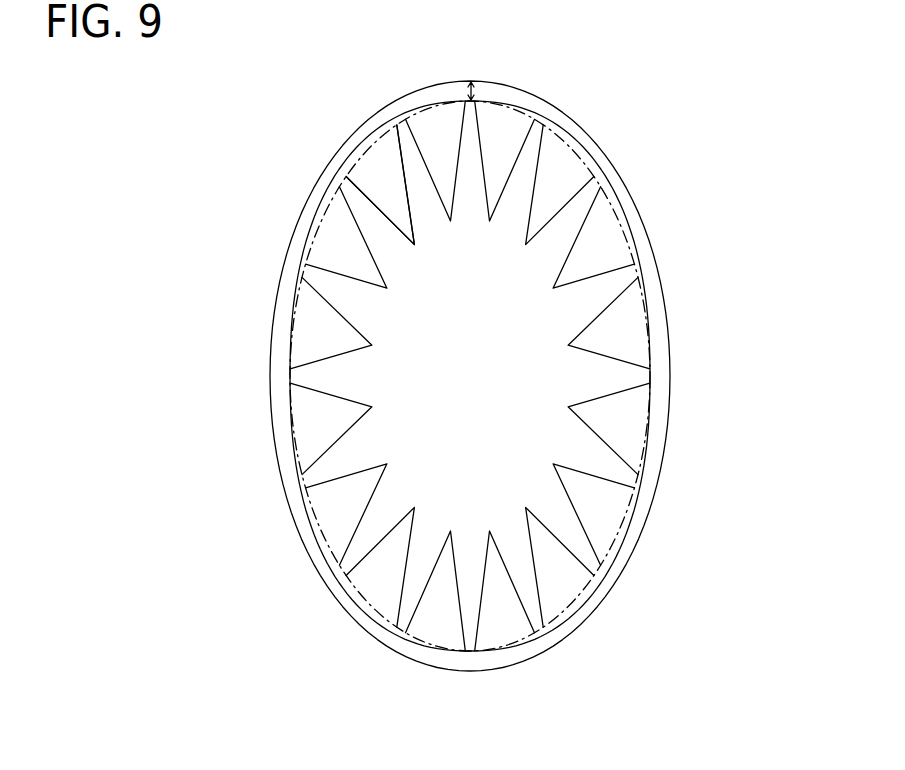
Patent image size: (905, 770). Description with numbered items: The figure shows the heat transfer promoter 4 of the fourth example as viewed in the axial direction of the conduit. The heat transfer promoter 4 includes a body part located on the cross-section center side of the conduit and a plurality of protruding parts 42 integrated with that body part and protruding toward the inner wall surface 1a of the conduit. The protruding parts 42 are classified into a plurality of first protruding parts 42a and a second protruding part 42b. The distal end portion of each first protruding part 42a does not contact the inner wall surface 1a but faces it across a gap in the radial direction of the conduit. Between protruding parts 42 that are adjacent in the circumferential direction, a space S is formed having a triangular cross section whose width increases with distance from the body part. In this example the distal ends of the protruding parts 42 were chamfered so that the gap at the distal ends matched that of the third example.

The inner wall surface 1a is at (568, 124).
The heat transfer promoter 4 is at (504, 376).
The protruding parts 42 is at (504, 376).
The first protruding parts 42a is at (568, 225).
The second protruding part 42b is at (420, 583).
The space S is at (388, 178).